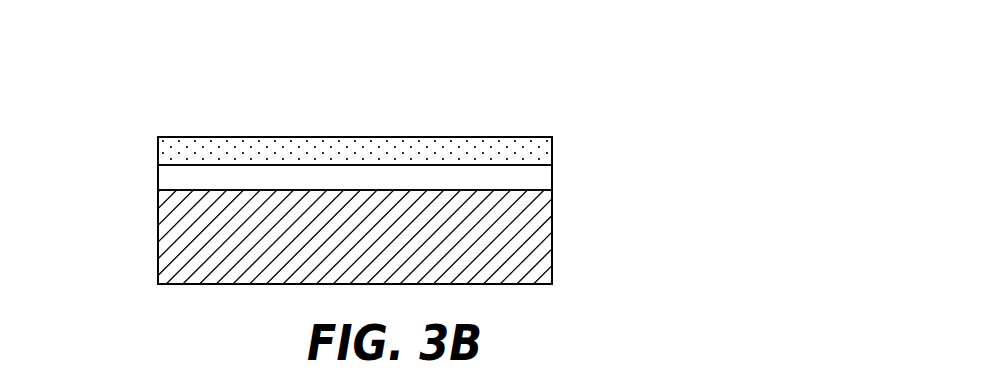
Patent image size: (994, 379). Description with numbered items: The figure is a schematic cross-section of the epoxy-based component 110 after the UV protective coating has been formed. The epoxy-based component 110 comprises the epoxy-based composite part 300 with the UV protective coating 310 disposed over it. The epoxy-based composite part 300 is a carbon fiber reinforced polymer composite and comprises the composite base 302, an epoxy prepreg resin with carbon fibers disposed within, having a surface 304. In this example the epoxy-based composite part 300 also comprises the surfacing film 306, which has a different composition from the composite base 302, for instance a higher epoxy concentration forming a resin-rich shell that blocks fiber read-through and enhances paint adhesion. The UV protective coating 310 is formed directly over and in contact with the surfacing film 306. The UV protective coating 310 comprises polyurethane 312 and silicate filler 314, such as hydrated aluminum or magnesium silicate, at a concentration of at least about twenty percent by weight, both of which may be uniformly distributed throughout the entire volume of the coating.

The epoxy-based component 110 is at (568, 82).
The epoxy-based composite part 300 is at (147, 168).
The composite base 302 is at (535, 253).
The surface 304 is at (410, 192).
The surfacing film 306 is at (535, 171).
The UV protective coating 310 is at (552, 150).
The polyurethane 312 is at (218, 152).
The silicate filler 314 is at (365, 150).